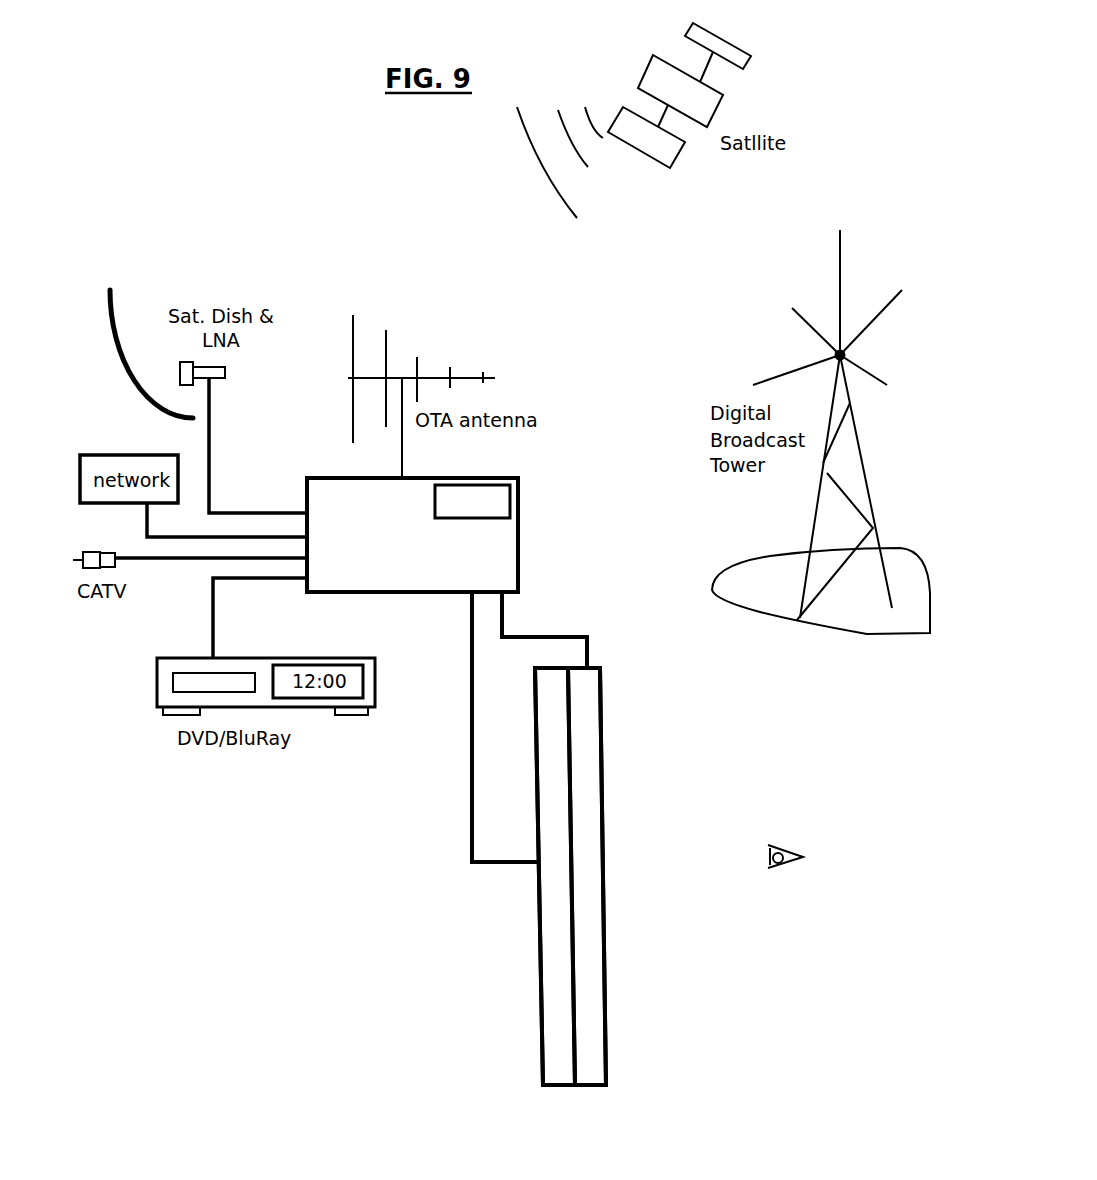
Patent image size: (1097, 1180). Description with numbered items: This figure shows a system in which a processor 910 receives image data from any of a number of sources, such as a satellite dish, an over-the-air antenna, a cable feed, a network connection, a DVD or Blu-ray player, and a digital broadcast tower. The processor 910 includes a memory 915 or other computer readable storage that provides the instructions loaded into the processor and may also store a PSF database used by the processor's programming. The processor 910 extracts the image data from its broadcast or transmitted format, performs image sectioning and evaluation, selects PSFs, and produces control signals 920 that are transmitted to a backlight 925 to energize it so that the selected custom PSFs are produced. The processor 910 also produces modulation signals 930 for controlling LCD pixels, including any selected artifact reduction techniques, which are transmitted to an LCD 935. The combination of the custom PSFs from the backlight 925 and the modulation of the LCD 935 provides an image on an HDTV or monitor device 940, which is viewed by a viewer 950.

The processor 910 is at (483, 576).
The memory 915 is at (472, 501).
The control signals 920 is at (505, 727).
The backlight 925 is at (555, 876).
The modulation signals 930 is at (544, 630).
The LCD 935 is at (587, 876).
The HDTV or monitor device 940 is at (634, 1050).
The viewer 950 is at (781, 868).